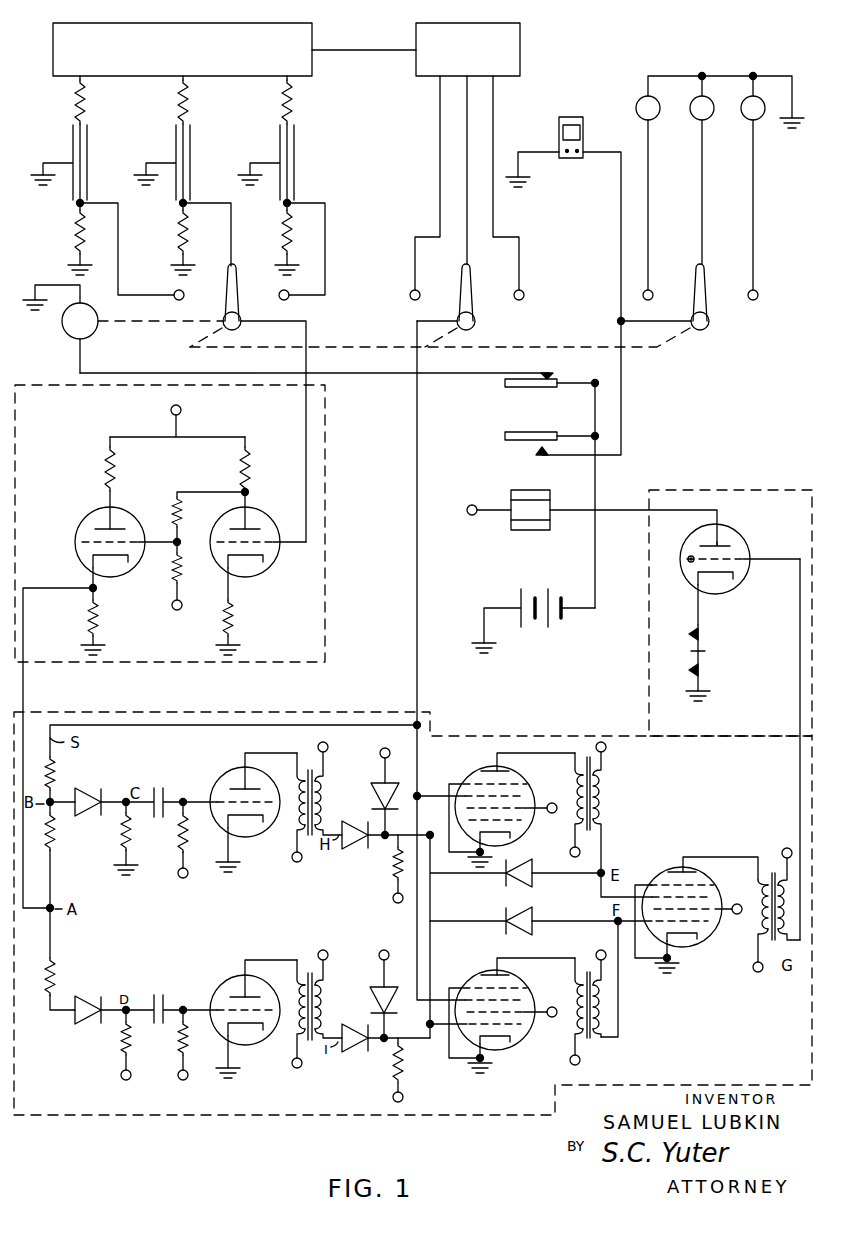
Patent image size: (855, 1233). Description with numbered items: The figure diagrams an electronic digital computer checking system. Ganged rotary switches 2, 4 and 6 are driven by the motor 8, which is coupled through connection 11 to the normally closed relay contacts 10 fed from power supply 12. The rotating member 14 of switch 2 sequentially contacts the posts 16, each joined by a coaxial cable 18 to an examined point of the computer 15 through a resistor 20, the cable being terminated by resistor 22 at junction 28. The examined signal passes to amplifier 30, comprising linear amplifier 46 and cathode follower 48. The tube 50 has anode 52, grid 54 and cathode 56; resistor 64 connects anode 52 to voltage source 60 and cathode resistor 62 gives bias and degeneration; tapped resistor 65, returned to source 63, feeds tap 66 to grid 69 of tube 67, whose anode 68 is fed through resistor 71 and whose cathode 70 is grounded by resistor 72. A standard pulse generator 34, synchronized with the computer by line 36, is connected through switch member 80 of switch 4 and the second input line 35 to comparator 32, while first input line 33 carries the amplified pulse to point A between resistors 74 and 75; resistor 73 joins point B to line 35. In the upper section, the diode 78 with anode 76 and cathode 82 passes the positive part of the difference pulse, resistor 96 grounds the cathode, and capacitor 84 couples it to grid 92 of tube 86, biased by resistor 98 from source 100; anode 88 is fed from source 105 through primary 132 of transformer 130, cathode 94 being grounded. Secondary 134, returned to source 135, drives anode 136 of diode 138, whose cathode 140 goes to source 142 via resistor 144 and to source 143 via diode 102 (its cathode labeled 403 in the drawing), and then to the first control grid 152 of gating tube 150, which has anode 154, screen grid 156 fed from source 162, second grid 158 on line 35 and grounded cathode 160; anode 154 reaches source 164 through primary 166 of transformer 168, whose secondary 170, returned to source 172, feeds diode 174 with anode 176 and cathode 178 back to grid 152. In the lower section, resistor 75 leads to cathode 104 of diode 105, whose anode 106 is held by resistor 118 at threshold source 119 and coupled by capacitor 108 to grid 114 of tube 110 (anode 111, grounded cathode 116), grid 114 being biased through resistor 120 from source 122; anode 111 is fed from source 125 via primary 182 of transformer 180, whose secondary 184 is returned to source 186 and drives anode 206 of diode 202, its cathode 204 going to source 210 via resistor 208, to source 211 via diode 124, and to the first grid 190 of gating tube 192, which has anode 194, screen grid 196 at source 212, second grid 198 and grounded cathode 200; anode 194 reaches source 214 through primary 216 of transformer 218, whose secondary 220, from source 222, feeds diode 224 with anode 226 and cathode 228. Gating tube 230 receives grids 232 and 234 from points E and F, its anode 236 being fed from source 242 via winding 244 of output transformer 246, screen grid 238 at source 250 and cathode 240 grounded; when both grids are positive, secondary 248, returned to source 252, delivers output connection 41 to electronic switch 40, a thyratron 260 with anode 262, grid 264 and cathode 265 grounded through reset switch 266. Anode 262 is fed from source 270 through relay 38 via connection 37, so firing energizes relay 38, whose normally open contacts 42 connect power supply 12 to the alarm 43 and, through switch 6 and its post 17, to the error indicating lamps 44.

The switch 2 is at (268, 421).
The switch 4 is at (496, 310).
The switch 6 is at (720, 310).
The motor or switch drive 8 is at (62, 323).
The normally closed relay contacts 10 is at (547, 388).
The connection 11 is at (358, 373).
The power supply 12 is at (566, 620).
The rotating member 14 is at (238, 285).
The computer 15 is at (716, 287).
The posts 16 is at (243, 258).
The switch contact 17 is at (759, 292).
The coaxial cable 18 is at (304, 151).
The resistor 20 is at (301, 99).
The resistor 22 is at (300, 228).
The junction 28 is at (283, 204).
The amplifier 30 is at (170, 538).
The comparator 32 is at (413, 929).
The first input line 33 is at (23, 693).
The standard pulse generator 34 is at (468, 49).
The second input line 35 is at (415, 645).
The synchronizing line 36 is at (364, 49).
The connection 37 is at (612, 510).
The relay 38 is at (540, 530).
The electronic switch 40 is at (672, 613).
The output connection 41 is at (803, 749).
The normally open contacts 42 is at (518, 442).
The buzzer or alarm 43 is at (575, 117).
The error indicating lamps 44 is at (720, 152).
The linear amplifier 46 is at (258, 517).
The cathode follower 48 is at (97, 517).
The vacuum tube 50 is at (262, 520).
The anode 52 is at (258, 530).
The control grid 54 is at (275, 555).
The cathode 56 is at (258, 568).
The voltage source 60 is at (166, 413).
The cathode resistor 62 is at (235, 614).
The displacement voltage source 63 is at (182, 601).
The resistor 64 is at (239, 472).
The tapped resistor 65 is at (189, 566).
The tap 66 is at (165, 536).
The vacuum tube 67 is at (118, 520).
The anode 68 is at (104, 519).
The control grid 69 is at (78, 545).
The cathode 70 is at (124, 568).
The resistor 71 is at (116, 461).
The resistor 72 is at (100, 617).
The resistor 73 is at (57, 765).
The resistor 74 is at (55, 856).
The resistor 75 is at (55, 958).
The anode 76 is at (74, 786).
The diode rectifier 78 is at (80, 816).
The switch member 80 is at (472, 287).
The cathode 82 is at (108, 794).
The capacitor 84 is at (160, 790).
The vacuum tube 86 is at (258, 778).
The anode 88 is at (243, 776).
The control grid 92 is at (222, 800).
The cathode 94 is at (226, 837).
The resistor 96 is at (120, 847).
The resistor 98 is at (178, 839).
The negative bias source 100 is at (182, 867).
The diode 102 is at (377, 794).
The cathode 104 is at (74, 1004).
The diode rectifier 105 is at (99, 1024).
The anode 106 is at (110, 1002).
The capacitor 108 is at (173, 996).
The vacuum tube 110 is at (258, 986).
The anode 111 is at (245, 982).
The control grid 114 is at (218, 996).
The cathode 116 is at (228, 1043).
The resistor 118 is at (120, 1040).
The threshold voltage source 119 is at (121, 1074).
The resistor 120 is at (178, 1040).
The negative source 122 is at (179, 1074).
The diode 124 is at (375, 997).
The positive voltage source 125 is at (397, 1024).
The pulse transformer 130 is at (308, 795).
The primary winding 132 is at (296, 836).
The secondary winding 134 is at (325, 780).
The negative voltage source 135 is at (318, 747).
The anode 136 is at (332, 812).
The diode 138 is at (352, 848).
The cathode 140 is at (370, 843).
The negative voltage source 142 is at (392, 895).
The negative voltage source 143 is at (380, 755).
The resistor 144 is at (396, 868).
The vacuum tube 150 is at (520, 772).
The first control grid 152 is at (464, 818).
The anode 154 is at (494, 764).
The screen grid 156 is at (452, 808).
The second control grid 158 is at (450, 794).
The cathode 160 is at (497, 848).
The voltage source 162 is at (549, 822).
The voltage source 164 is at (571, 851).
The primary winding 166 is at (574, 776).
The pulse transformer 168 is at (591, 791).
The secondary winding 170 is at (606, 778).
The negative voltage source 172 is at (596, 749).
The diode 174 is at (518, 882).
The anode 176 is at (532, 880).
The cathode 178 is at (506, 887).
The pulse transformer 180 is at (308, 1000).
The primary winding 182 is at (296, 1040).
The secondary winding 184 is at (327, 985).
The negative voltage source 186 is at (318, 954).
The first control grid 190 is at (466, 1040).
The vacuum tube 192 is at (518, 976).
The anode 194 is at (496, 970).
The screen grid 196 is at (528, 1033).
The second control grid 198 is at (448, 992).
The cathode 200 is at (492, 1054).
The diode rectifier 202 is at (355, 1051).
The cathode 204 is at (372, 1045).
The anode 206 is at (372, 1013).
The resistor 208 is at (404, 1060).
The negative voltage source 210 is at (404, 1094).
The negative voltage source 211 is at (379, 957).
The positive voltage source 212 is at (547, 1026).
The positive voltage source 214 is at (570, 1060).
The primary winding 216 is at (574, 984).
The pulse transformer 218 is at (590, 997).
The secondary winding 220 is at (622, 985).
The negative voltage source 222 is at (597, 951).
The diode rectifier 224 is at (519, 934).
The anode 226 is at (532, 911).
The cathode 228 is at (506, 919).
The vacuum tube 230 is at (708, 874).
The first control grid 232 is at (626, 885).
The second control grid 234 is at (646, 934).
The anode 236 is at (680, 874).
The screen grid 238 is at (712, 932).
The cathode 240 is at (690, 955).
The voltage source 242 is at (752, 970).
The winding 244 is at (729, 892).
The output transformer 246 is at (773, 899).
The secondary winding 248 is at (790, 942).
The voltage source 250 is at (724, 918).
The negative voltage source 252 is at (782, 852).
The thyratron 260 is at (750, 540).
The anode 262 is at (722, 542).
The control grid 264 is at (748, 568).
The cathode 265 is at (714, 592).
The reset switch 266 is at (676, 632).
The voltage source 270 is at (477, 522).
The diode cathode 403 is at (395, 812).